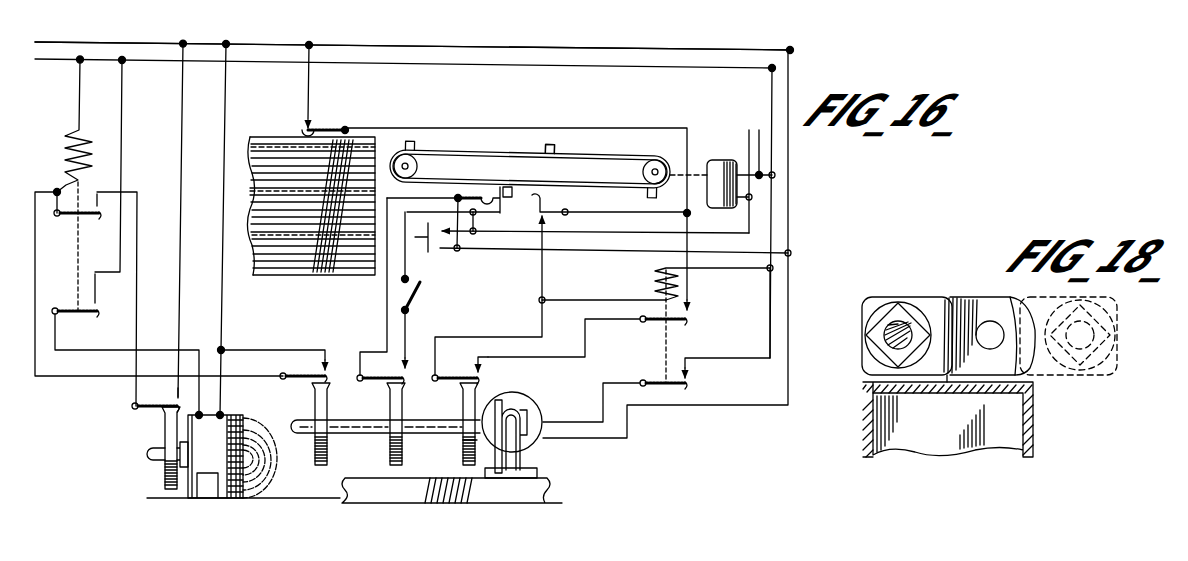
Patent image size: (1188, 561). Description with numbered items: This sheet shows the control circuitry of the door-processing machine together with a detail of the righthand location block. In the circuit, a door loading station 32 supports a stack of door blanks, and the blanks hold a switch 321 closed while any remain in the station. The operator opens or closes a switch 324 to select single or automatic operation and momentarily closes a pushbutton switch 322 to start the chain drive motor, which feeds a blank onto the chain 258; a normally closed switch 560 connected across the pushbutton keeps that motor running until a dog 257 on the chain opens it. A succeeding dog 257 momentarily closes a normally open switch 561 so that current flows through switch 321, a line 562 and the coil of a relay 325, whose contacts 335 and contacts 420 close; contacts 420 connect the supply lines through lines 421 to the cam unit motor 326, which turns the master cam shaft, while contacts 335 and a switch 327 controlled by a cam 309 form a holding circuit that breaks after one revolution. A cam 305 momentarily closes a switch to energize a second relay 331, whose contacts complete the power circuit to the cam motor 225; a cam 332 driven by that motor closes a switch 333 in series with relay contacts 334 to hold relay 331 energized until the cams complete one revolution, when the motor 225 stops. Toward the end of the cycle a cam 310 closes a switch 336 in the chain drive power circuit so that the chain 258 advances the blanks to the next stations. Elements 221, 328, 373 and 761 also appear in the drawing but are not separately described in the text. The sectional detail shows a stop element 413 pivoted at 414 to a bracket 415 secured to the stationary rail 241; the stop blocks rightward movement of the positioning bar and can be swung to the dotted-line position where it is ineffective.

In FIG. 16, the door loading station 32 is at (279, 125).
In FIG. 16, the contact 221 is at (52, 306).
In FIG. 16, the cam motor 225 is at (236, 413).
In FIG. 16, the dog 257 is at (548, 144).
In FIG. 16, the chain 258 is at (470, 152).
In FIG. 16, the cam 305 is at (312, 442).
In FIG. 16, the cam 309 is at (462, 450).
In FIG. 16, the cam 310 is at (345, 480).
In FIG. 16, the switch 321 is at (320, 126).
In FIG. 16, the pushbutton switch 322 is at (425, 253).
In FIG. 16, the switch 324 is at (775, 174).
In FIG. 16, the relay 325 is at (657, 274).
In FIG. 16, the cam unit motor 326 is at (523, 392).
In FIG. 16, the switch 327 is at (462, 404).
In FIG. 16, the contact 328 is at (470, 376).
In FIG. 16, the second relay 331 is at (92, 156).
In FIG. 16, the cam 332 is at (165, 430).
In FIG. 16, the switch 333 is at (142, 404).
In FIG. 16, the relay contacts 334 is at (75, 218).
In FIG. 16, the relay contacts 335 is at (686, 328).
In FIG. 16, the switch 336 is at (384, 384).
In FIG. 16, the supply line 373 is at (618, 84).
In FIG. 16, the relay contacts 420 is at (688, 387).
In FIG. 16, the lines 421 is at (806, 290).
In FIG. 16, the normally closed switch 560 is at (506, 214).
In FIG. 16, the normally open switch 561 is at (542, 195).
In FIG. 16, the line 562 is at (656, 127).
In FIG. 16, the motor 761 is at (734, 160).
In FIG. 18, the stop element 413 is at (943, 312).
In FIG. 18, the pivot 414 is at (990, 330).
In FIG. 18, the bracket 415 is at (1030, 372).
In FIG. 18, the stationary rail 241 is at (1030, 430).